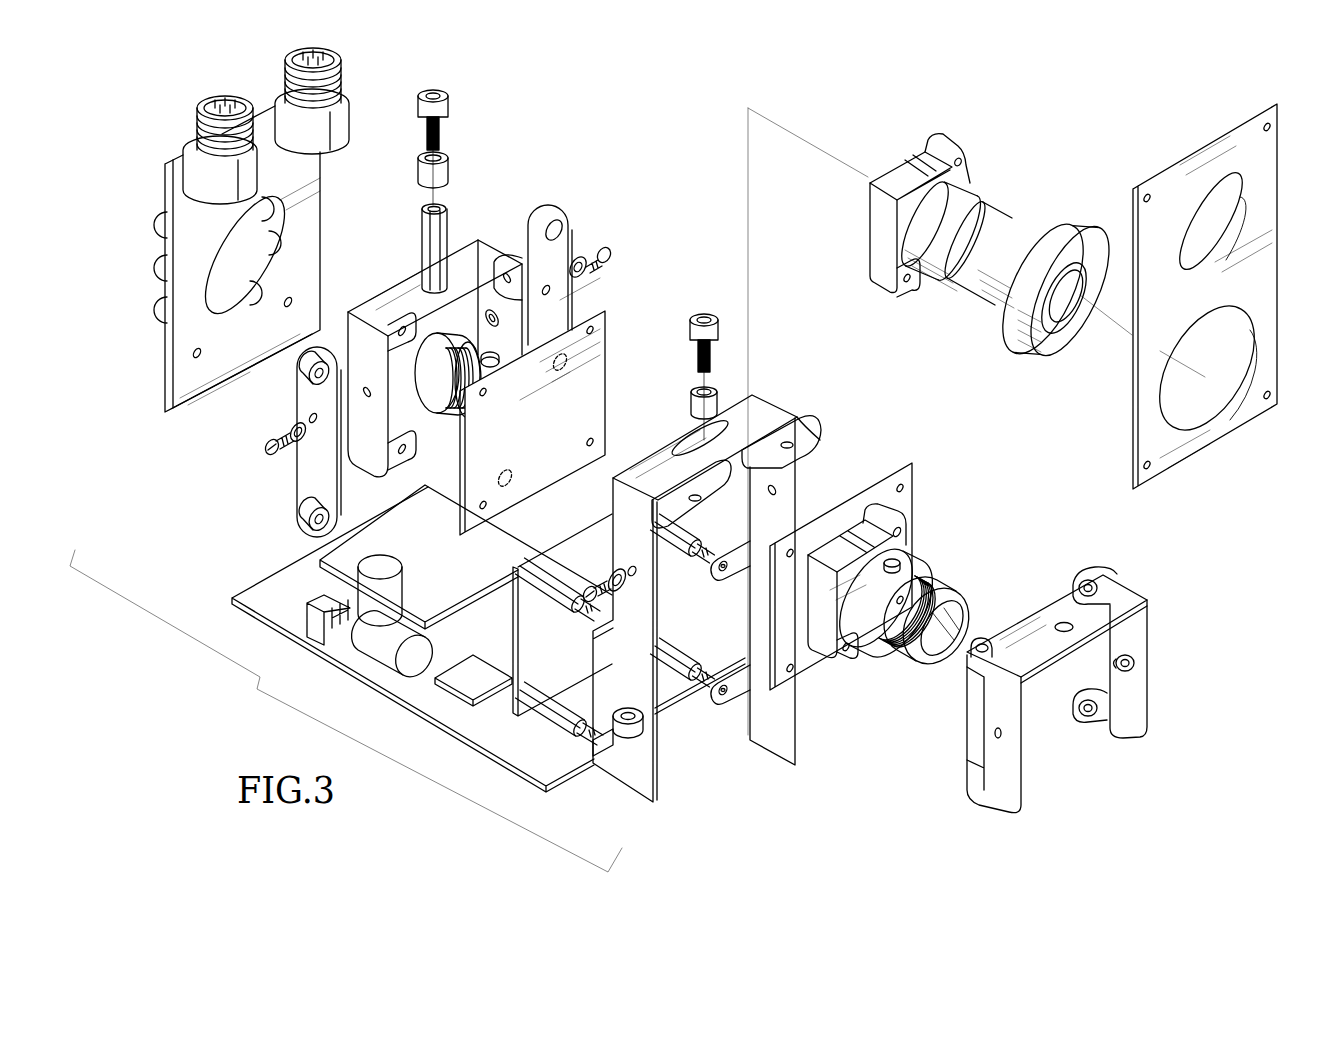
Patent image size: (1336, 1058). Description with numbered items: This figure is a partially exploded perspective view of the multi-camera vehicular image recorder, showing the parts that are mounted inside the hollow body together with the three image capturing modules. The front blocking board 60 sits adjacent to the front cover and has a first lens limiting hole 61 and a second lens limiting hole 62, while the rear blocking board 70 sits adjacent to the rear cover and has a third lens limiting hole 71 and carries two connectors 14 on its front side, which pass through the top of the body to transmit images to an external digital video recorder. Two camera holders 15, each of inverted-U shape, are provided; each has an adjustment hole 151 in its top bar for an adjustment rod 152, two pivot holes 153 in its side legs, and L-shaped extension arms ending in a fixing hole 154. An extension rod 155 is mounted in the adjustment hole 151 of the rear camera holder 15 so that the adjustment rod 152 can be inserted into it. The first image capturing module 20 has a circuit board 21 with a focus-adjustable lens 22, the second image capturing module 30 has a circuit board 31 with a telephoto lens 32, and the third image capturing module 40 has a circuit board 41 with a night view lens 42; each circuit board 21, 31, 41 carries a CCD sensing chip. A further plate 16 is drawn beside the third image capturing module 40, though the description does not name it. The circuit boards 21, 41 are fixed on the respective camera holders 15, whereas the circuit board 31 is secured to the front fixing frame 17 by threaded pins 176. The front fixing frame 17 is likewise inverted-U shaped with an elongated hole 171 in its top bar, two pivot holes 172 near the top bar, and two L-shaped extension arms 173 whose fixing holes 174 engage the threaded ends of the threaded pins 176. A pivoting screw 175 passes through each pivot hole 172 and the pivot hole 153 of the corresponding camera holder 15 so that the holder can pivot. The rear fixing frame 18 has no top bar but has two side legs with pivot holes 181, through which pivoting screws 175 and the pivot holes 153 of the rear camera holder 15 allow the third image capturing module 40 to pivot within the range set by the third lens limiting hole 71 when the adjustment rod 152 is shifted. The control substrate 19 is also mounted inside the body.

The connector 14 is at (333, 55).
The camera holder 15 is at (481, 245).
The mounting plate 16 is at (582, 410).
The front fixing frame 17 is at (645, 780).
The rear fixing frame 18 is at (312, 483).
The control substrate 19 is at (270, 590).
The first image capturing module 20 is at (913, 572).
The circuit board 21 is at (905, 475).
The lens 22 is at (960, 616).
The second image capturing module 30 is at (953, 193).
The circuit board 31 is at (516, 632).
The lens 32 is at (1036, 342).
The third image capturing module 40 is at (458, 412).
The circuit board 41 is at (527, 480).
The lens 42 is at (448, 336).
The front blocking board 60 is at (1258, 163).
The first lens limiting hole 61 is at (1238, 212).
The second lens limiting hole 62 is at (1255, 355).
The rear blocking board 70 is at (185, 387).
The third lens limiting hole 71 is at (225, 245).
The adjustment hole 151 is at (1070, 628).
The adjustment rod 152 is at (448, 118).
The pivot hole 153 is at (365, 392).
The fixing hole 154 is at (1090, 704).
The extension rod 155 is at (428, 240).
The elongated hole 171 is at (722, 445).
The pivot hole 172 is at (640, 577).
The extension arm 173 is at (748, 556).
The fixing hole 174 is at (718, 563).
The pivoting screw 175 is at (270, 447).
The threaded pin 176 is at (547, 698).
The pivot hole 181 is at (310, 418).